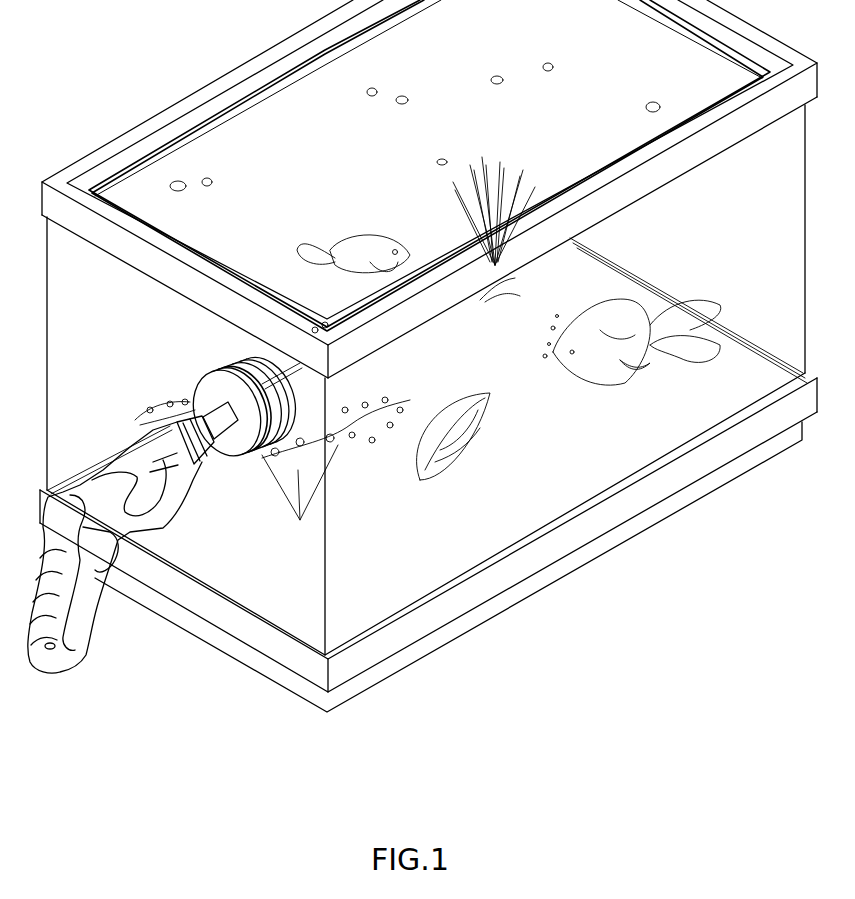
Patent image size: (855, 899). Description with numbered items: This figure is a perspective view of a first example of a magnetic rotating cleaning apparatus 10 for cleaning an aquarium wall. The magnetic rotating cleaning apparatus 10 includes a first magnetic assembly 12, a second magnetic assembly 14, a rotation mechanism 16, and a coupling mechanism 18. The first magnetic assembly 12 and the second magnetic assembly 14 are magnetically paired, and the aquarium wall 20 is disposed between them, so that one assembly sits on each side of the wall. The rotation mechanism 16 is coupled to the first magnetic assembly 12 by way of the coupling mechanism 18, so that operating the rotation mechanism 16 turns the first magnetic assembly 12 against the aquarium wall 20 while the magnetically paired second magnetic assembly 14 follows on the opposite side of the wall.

The magnetic rotating cleaning apparatus 10 is at (167, 500).
The first magnetic assembly 12 is at (236, 442).
The second magnetic assembly 14 is at (248, 365).
The rotation mechanism 16 is at (88, 657).
The coupling mechanism 18 is at (205, 412).
The aquarium wall 20 is at (287, 598).